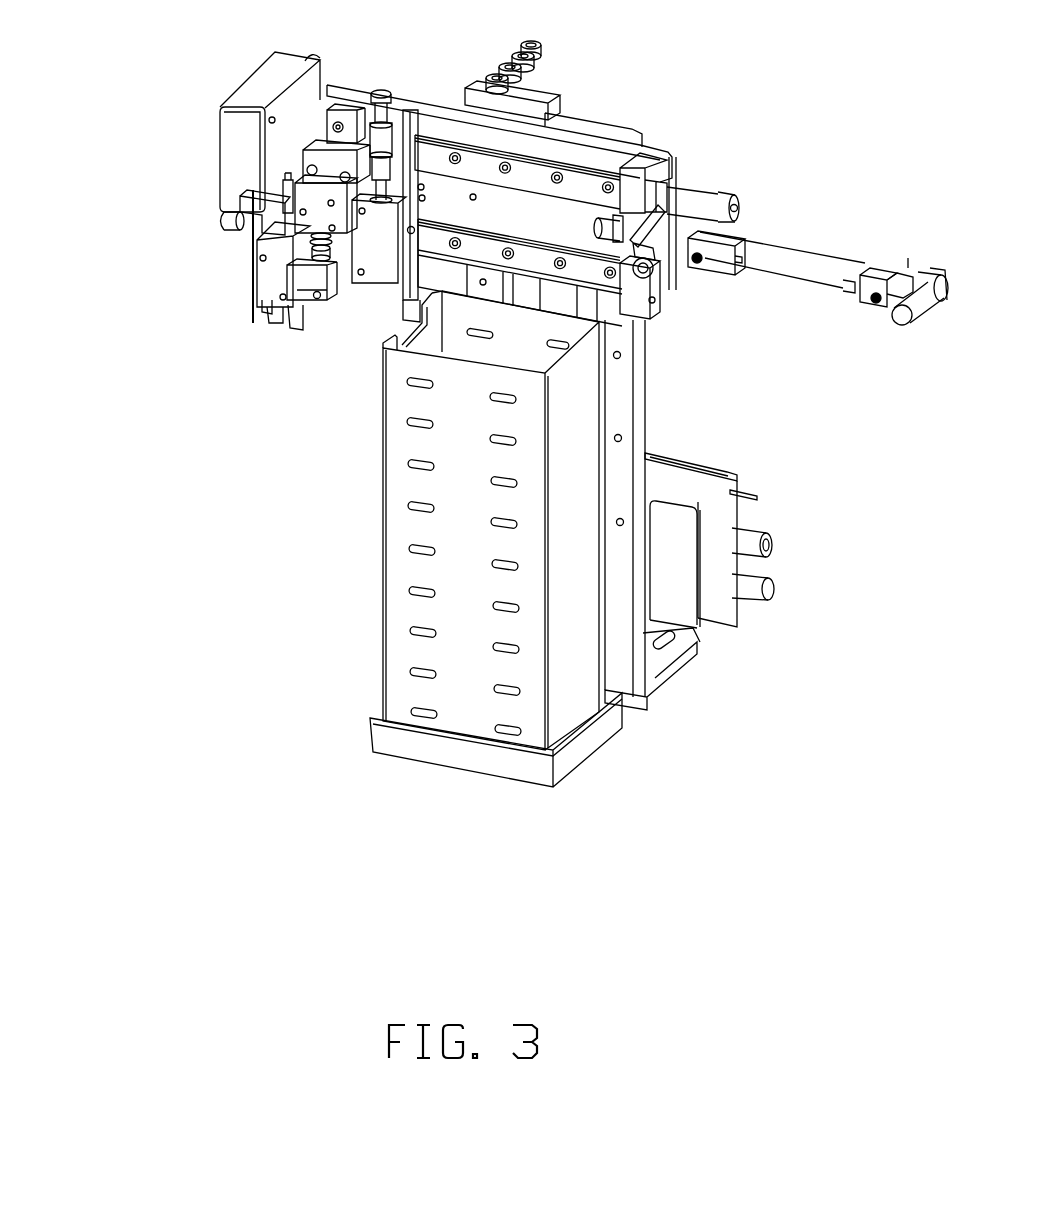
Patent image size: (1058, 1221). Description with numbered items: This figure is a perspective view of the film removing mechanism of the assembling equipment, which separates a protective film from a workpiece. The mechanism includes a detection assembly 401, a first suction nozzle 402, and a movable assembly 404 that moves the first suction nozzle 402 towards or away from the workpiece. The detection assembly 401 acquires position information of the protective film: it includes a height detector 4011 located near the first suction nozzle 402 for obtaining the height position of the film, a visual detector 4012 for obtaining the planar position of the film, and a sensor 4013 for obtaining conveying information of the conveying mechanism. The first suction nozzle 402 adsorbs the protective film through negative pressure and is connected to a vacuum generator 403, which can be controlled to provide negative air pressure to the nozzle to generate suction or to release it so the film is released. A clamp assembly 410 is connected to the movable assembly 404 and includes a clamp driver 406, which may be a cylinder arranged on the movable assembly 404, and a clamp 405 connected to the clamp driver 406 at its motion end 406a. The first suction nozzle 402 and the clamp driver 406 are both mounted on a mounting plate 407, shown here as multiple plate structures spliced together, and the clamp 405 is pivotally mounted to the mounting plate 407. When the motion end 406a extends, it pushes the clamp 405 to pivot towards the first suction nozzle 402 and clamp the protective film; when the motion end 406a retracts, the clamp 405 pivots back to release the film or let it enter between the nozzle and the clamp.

The clamp assembly 410 is at (90, 388).
The clamp driver 406 is at (310, 208).
The detection assembly 401 is at (142, 280).
The sensor 4013 is at (242, 202).
The visual detector 4012 is at (250, 228).
The height detector 4011 is at (260, 288).
The mounting plate 407 is at (275, 288).
The first suction nozzle 402 is at (283, 312).
The clamp 405 is at (293, 326).
The motion end 406a is at (326, 300).
The movable assembly 404 is at (547, 146).
The vacuum generator 403 is at (713, 613).